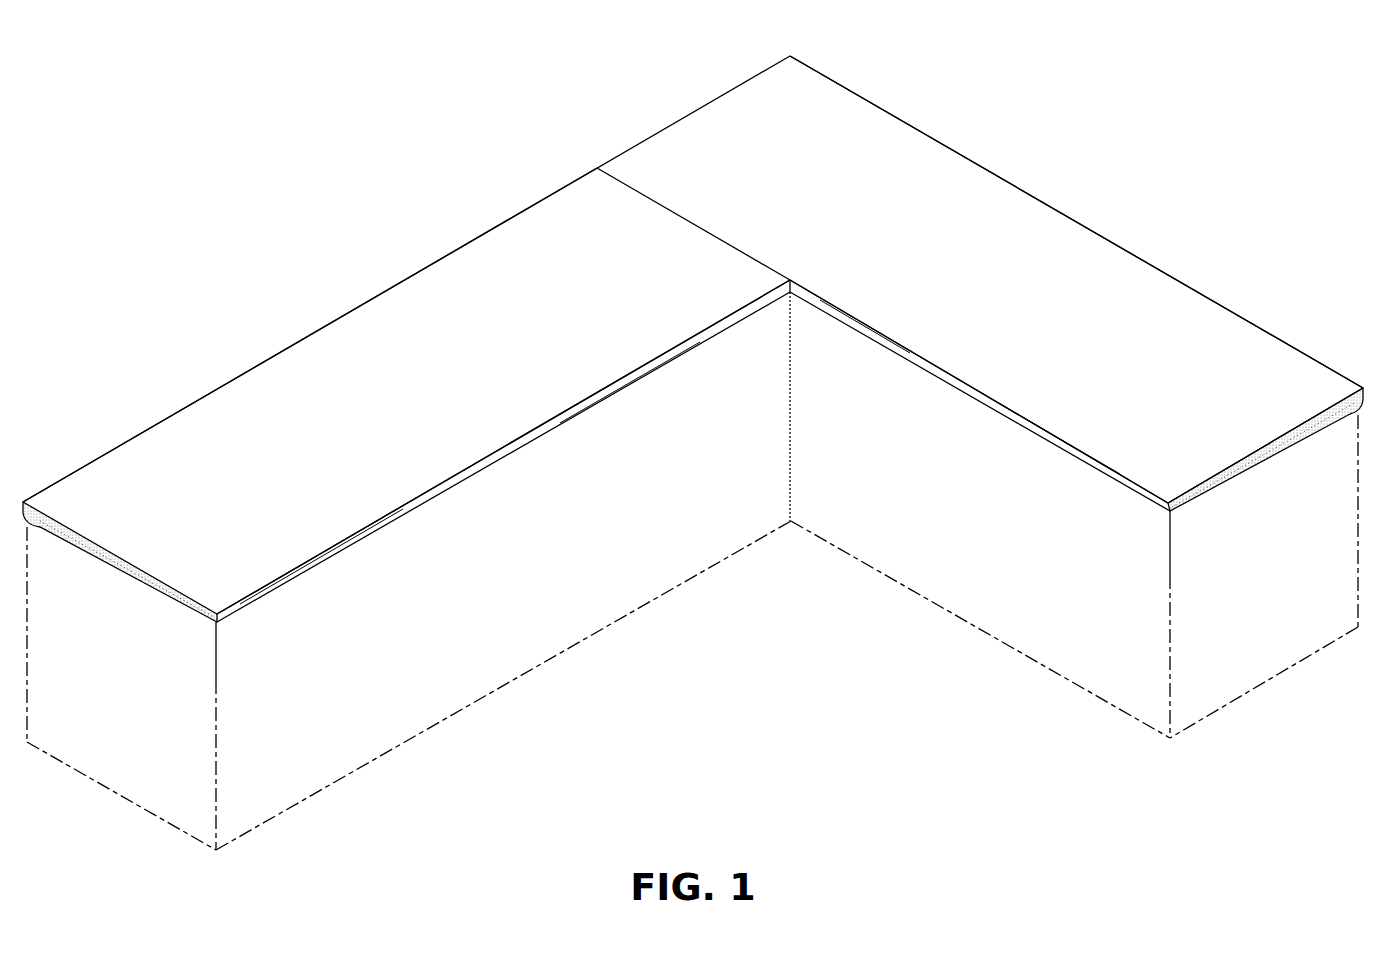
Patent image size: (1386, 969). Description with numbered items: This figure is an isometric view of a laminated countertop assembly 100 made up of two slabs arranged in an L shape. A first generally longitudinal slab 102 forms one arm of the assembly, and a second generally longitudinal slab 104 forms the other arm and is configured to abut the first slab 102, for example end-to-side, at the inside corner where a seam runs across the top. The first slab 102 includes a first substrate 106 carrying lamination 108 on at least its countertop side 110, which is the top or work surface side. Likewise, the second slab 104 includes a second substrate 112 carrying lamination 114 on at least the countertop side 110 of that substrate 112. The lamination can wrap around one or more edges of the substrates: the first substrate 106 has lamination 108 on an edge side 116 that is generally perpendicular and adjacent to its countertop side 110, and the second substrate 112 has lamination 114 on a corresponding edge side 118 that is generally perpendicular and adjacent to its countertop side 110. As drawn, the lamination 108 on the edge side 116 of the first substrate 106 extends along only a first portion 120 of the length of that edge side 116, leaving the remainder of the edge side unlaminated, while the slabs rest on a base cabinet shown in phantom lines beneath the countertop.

The laminated countertop assembly 100 is at (1167, 102).
The first generally longitudinal slab 102 is at (1085, 371).
The second generally longitudinal slab 104 is at (437, 399).
The first substrate 106 is at (1353, 418).
The lamination 108 is at (1160, 300).
The countertop side 110 is at (877, 140).
The second substrate 112 is at (40, 525).
The lamination 114 is at (322, 363).
The edge side 116 is at (982, 398).
The edge side 118 is at (503, 455).
The first portion 120 is at (858, 328).